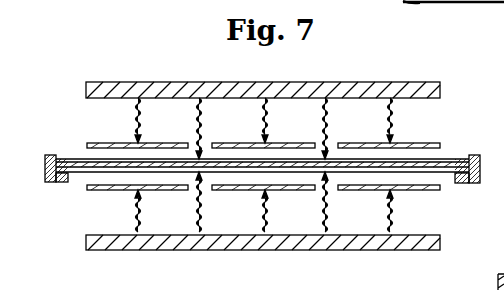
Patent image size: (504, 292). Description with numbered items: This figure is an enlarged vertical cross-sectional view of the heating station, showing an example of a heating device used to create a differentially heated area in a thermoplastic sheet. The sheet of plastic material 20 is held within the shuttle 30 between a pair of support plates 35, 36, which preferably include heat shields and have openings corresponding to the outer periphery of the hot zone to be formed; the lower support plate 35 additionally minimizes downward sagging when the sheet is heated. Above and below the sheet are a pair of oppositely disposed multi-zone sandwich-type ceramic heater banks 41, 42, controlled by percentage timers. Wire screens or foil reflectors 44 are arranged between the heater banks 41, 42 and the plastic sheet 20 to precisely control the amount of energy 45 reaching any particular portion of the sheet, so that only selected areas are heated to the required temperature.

The sheet of plastic material 20 is at (437, 163).
The shuttle 30 is at (53, 184).
The support plate 35 is at (82, 173).
The support plate 36 is at (87, 159).
The ceramic heater bank 41 is at (95, 87).
The ceramic heater bank 42 is at (113, 246).
The wire screens or foil reflectors 44 is at (113, 143).
The energy 45 is at (196, 113).